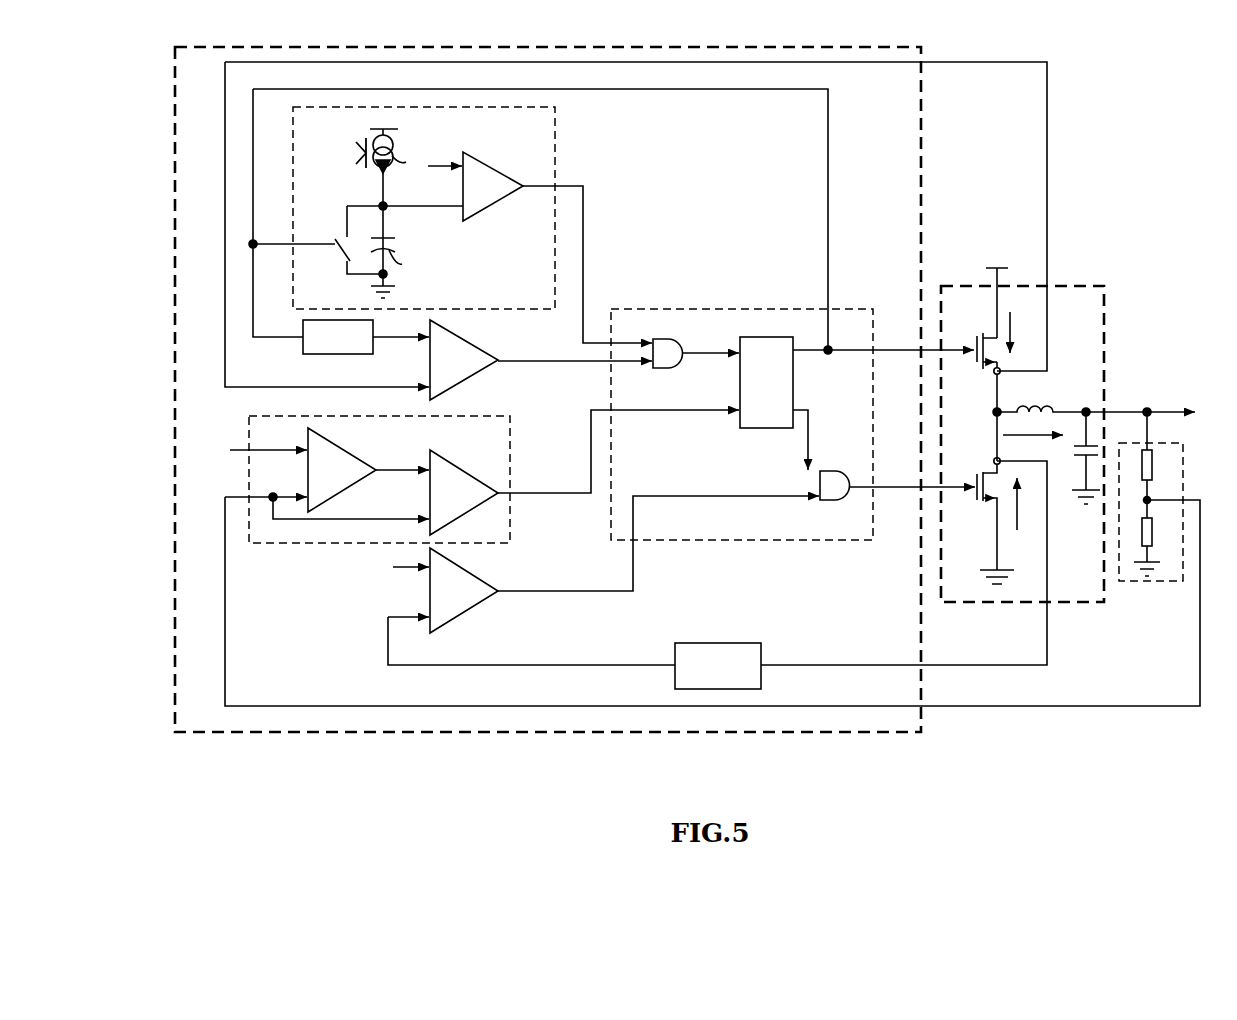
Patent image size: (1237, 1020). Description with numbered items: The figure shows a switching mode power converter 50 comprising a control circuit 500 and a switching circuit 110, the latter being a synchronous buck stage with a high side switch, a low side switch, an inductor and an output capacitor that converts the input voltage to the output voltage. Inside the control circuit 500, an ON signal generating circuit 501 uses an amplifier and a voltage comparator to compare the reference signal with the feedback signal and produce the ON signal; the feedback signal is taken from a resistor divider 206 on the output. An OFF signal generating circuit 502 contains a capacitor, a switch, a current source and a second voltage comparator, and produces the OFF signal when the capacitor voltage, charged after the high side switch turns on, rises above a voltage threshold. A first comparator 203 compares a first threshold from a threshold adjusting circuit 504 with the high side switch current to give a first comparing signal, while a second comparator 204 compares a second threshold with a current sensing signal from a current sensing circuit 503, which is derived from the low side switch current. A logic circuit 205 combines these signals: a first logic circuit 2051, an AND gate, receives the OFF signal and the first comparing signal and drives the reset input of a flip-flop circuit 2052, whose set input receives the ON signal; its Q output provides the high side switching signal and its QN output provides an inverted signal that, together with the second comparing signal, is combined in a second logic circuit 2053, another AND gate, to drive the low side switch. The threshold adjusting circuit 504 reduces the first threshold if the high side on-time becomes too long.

The switching mode power converter 50 is at (1103, 209).
The control circuit 500 is at (921, 142).
The OFF signal generating circuit 502 is at (555, 141).
The threshold adjusting circuit 504 is at (310, 354).
The first comparator 203 is at (456, 387).
The ON signal generating circuit 501 is at (249, 430).
The second comparator 204 is at (455, 618).
The logic circuit 205 is at (722, 309).
The first logic circuit 2051 is at (672, 368).
The flip-flop circuit 2052 is at (793, 366).
The second logic circuit 2053 is at (838, 500).
The switching circuit 110 is at (1104, 341).
The feedback voltage divider 206 is at (1155, 448).
The current sensing circuit 503 is at (745, 643).